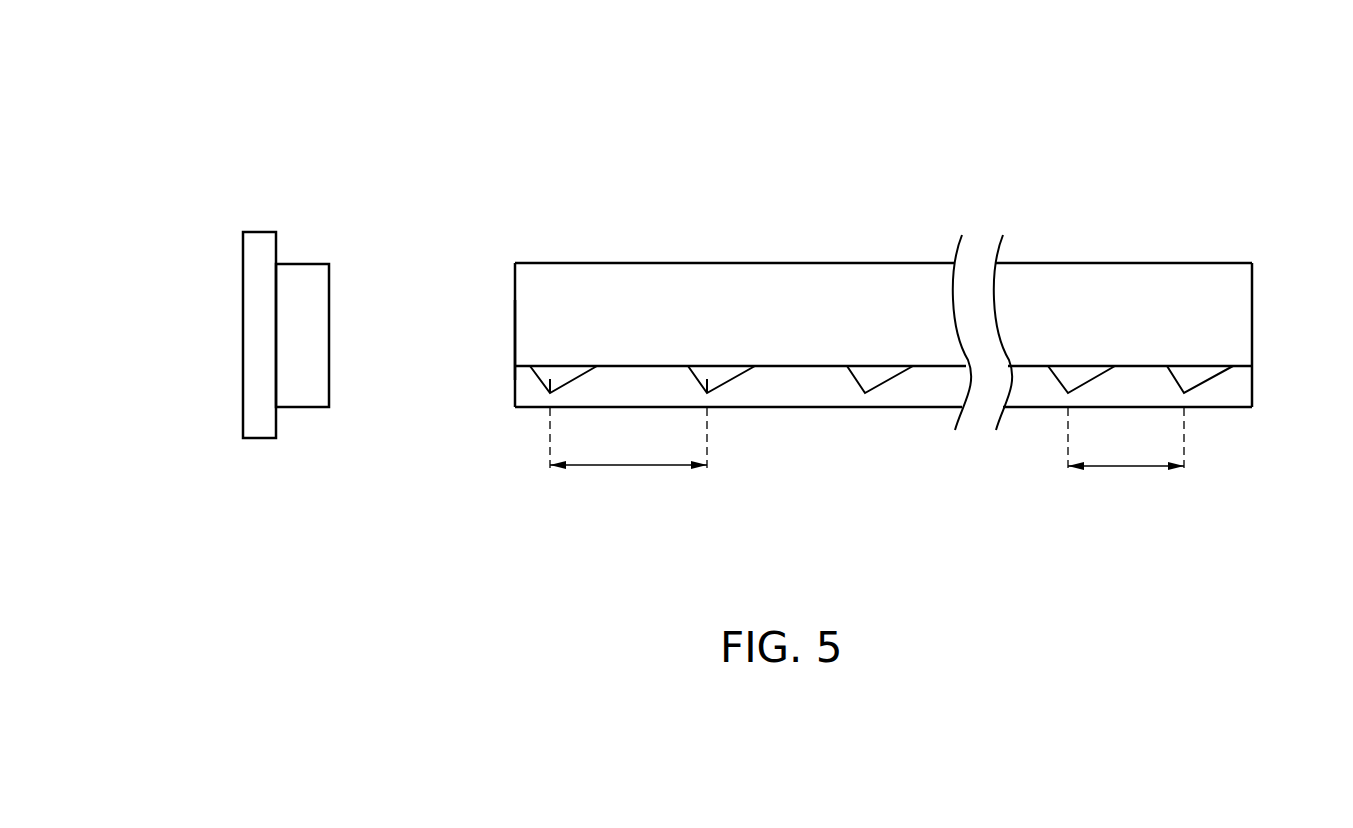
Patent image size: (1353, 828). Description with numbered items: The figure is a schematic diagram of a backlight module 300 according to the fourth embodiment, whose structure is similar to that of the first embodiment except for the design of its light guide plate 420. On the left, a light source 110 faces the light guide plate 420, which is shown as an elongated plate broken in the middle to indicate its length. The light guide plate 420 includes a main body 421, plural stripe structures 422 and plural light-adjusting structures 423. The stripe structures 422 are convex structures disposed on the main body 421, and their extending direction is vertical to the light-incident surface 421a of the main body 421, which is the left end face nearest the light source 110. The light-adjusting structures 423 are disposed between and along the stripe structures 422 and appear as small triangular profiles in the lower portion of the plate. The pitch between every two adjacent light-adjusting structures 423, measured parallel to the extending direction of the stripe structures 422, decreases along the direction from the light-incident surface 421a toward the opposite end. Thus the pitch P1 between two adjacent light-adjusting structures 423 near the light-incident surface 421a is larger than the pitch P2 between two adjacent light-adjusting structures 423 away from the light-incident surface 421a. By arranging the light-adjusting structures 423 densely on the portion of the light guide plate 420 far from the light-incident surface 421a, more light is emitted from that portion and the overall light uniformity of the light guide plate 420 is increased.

The backlight module 300 is at (200, 107).
The light source 110 is at (259, 337).
The light guide plate 420 is at (528, 220).
The main body 421 is at (753, 282).
The light-incident surface 421a is at (515, 334).
The stripe structures 422 is at (838, 390).
The light-adjusting structures 423 is at (749, 406).
The pitch P1 is at (628, 440).
The pitch P2 is at (1126, 439).